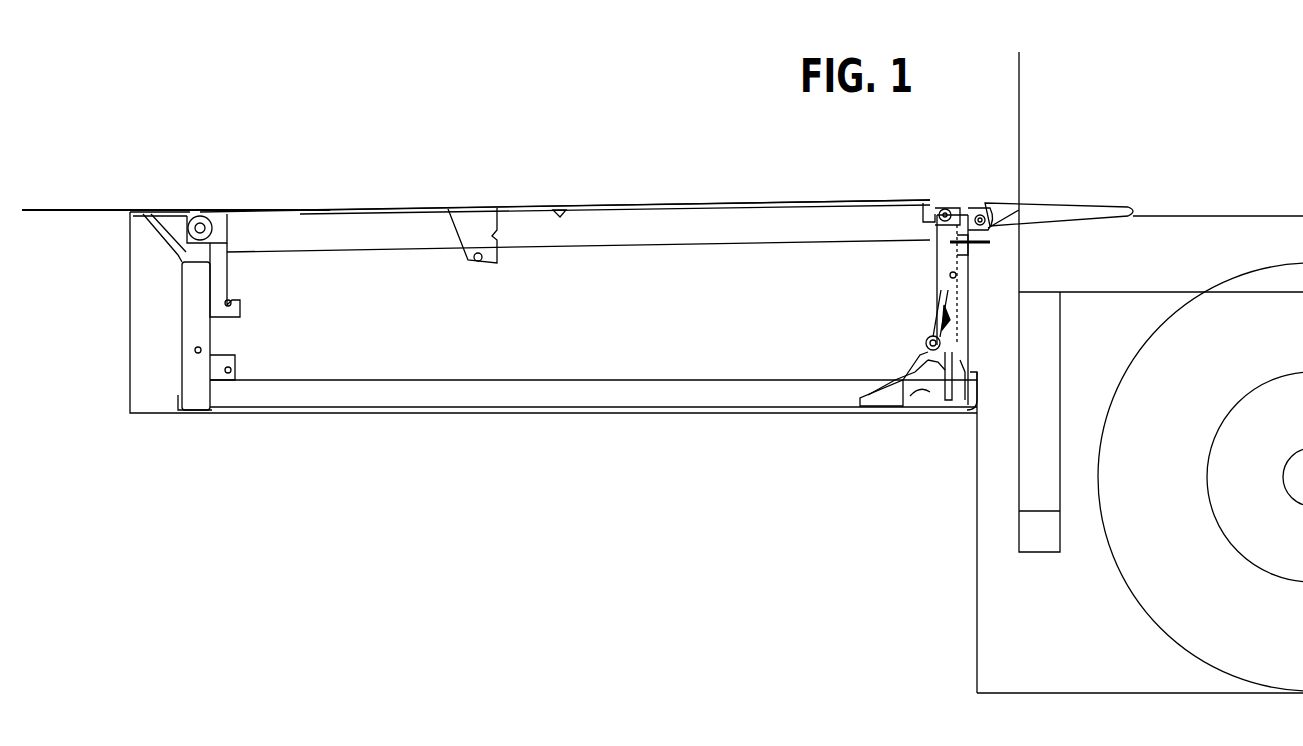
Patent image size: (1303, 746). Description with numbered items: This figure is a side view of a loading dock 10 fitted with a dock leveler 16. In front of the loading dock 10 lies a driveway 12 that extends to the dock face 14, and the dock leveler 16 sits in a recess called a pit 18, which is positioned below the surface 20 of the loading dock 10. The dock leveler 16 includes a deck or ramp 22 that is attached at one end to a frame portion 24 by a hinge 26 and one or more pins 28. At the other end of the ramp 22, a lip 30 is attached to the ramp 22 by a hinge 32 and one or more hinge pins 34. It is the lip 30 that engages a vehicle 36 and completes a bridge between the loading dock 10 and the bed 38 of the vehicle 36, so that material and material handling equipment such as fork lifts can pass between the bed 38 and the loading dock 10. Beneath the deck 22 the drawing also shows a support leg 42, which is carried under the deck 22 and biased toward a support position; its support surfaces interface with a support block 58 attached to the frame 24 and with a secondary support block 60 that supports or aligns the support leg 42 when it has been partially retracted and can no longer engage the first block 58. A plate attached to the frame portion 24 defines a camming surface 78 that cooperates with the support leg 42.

The loading dock 10 is at (610, 122).
The driveway 12 is at (1075, 693).
The dock face 14 is at (978, 592).
The dock leveler 16 is at (485, 163).
The pit 18 is at (383, 413).
The surface of the loading dock 20 is at (96, 210).
The deck or ramp portion 22 is at (645, 203).
The frame portion 24 is at (540, 380).
The hinge 26 is at (212, 212).
The pins 28 is at (225, 237).
The lip 30 is at (1052, 203).
The hinge 32 is at (978, 208).
The hinge pins 34 is at (946, 208).
The vehicle 36 is at (1256, 98).
The bed of a vehicle 38 is at (1243, 215).
The support leg 42 is at (940, 288).
The support block 58 is at (960, 370).
The secondary support block 60 is at (932, 412).
The camming surface 78 is at (925, 348).